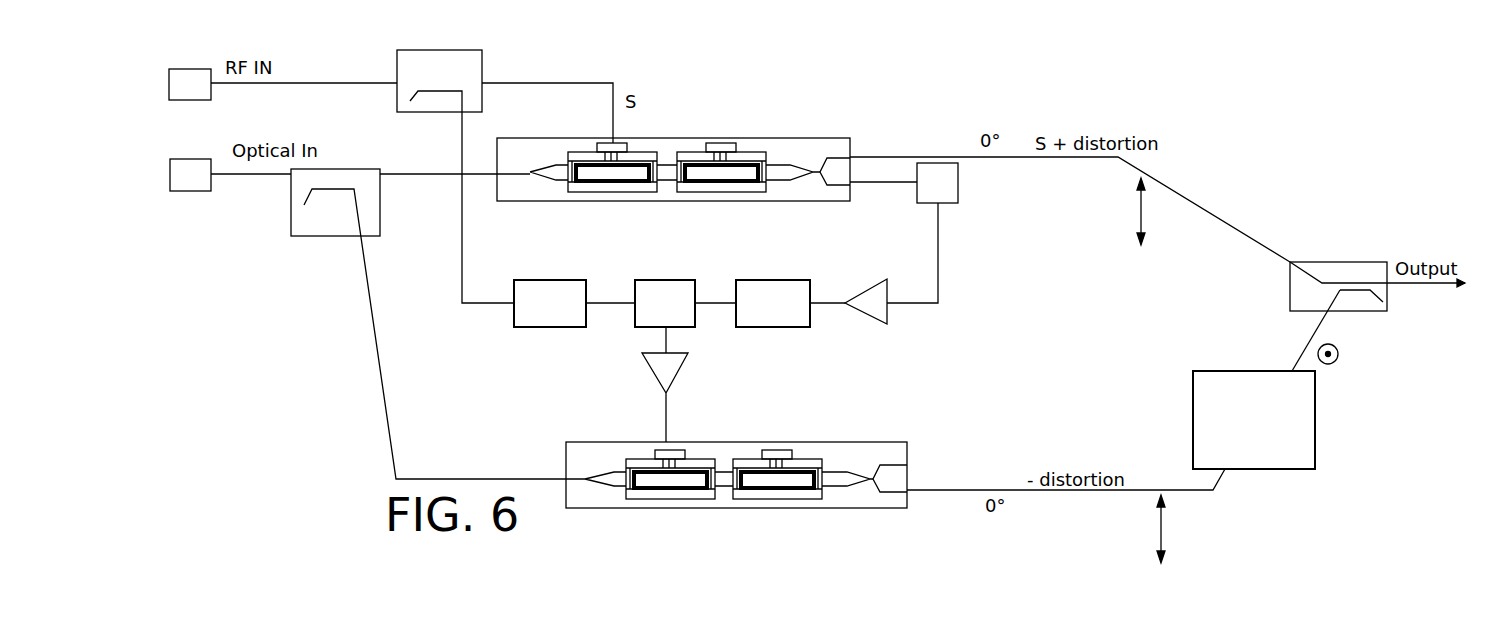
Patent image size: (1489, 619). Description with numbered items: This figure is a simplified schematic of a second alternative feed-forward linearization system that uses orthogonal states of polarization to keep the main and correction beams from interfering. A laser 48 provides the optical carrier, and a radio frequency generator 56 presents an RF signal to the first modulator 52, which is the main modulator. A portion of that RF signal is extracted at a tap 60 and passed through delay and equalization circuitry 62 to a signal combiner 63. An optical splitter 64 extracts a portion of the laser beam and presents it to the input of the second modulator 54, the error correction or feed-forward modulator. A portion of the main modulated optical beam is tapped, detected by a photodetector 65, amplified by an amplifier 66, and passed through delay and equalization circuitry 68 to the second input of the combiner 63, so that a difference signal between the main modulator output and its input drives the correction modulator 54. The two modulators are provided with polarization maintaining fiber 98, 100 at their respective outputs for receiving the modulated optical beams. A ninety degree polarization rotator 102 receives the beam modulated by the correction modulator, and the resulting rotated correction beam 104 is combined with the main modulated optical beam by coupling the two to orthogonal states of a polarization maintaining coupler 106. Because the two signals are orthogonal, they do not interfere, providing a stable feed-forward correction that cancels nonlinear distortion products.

The laser 48 is at (183, 159).
The first modulator 52 is at (780, 138).
The second modulator 54 is at (790, 442).
The radio frequency generator 56 is at (190, 69).
The tap 60 is at (445, 50).
The delay and equalization circuitry 62 is at (541, 280).
The signal combiner 63 is at (657, 280).
The optical splitter 64 is at (345, 169).
The photodetector 65 is at (952, 186).
The amplifier 66 is at (850, 294).
The delay and equalization circuitry 68 is at (760, 280).
The polarization maintaining fiber 98 is at (1135, 170).
The polarization maintaining fiber 100 is at (962, 488).
The 90 degree polarization rotator 102 is at (1192, 405).
The rotated correction beam 104 is at (1318, 352).
The polarization maintaining coupler 106 is at (1326, 268).